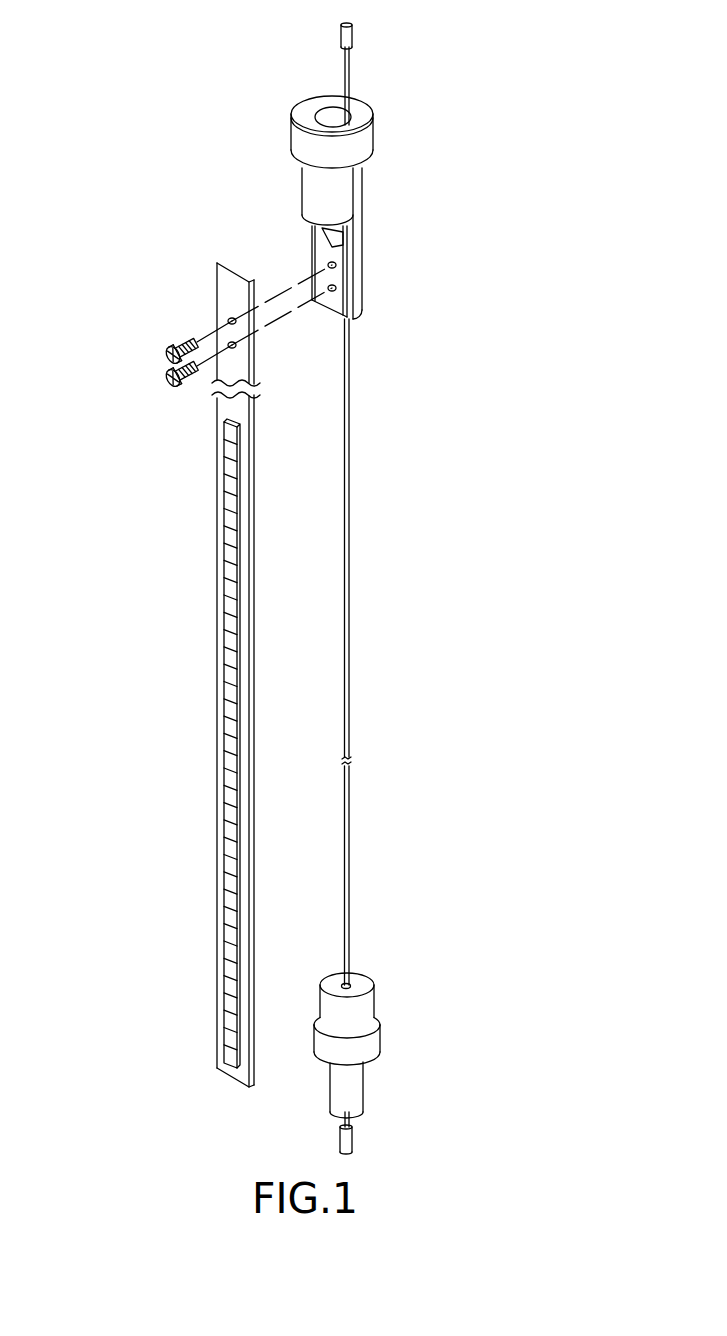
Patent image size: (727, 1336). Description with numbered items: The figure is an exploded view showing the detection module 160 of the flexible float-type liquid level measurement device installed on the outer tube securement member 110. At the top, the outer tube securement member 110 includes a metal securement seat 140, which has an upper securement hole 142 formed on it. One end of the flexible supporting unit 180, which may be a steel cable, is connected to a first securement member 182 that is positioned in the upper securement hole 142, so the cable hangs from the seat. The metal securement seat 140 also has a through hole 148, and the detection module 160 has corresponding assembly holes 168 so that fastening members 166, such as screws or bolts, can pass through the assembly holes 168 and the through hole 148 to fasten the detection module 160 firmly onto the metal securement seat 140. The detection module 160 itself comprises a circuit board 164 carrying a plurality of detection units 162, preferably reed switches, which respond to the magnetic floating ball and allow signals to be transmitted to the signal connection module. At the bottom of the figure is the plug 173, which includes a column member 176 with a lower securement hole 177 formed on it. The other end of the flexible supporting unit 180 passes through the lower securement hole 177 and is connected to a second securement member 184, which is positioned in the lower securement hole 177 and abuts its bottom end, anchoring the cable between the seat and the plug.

The outer tube securement member 110 is at (355, 197).
The metal securement seat 140 is at (310, 183).
The upper securement hole 142 is at (353, 118).
The through hole 148 is at (329, 262).
The detection module 160 is at (161, 743).
The detection units 162 is at (230, 610).
The circuit board 164 is at (218, 667).
The fastening member 166 is at (163, 352).
The assembly holes 168 is at (228, 320).
The plug 173 is at (403, 1028).
The column member 176 is at (367, 1004).
The lower securement hole 177 is at (350, 982).
The flexible supporting unit 180 is at (350, 523).
The first securement member 182 is at (352, 33).
The second securement member 184 is at (355, 1138).